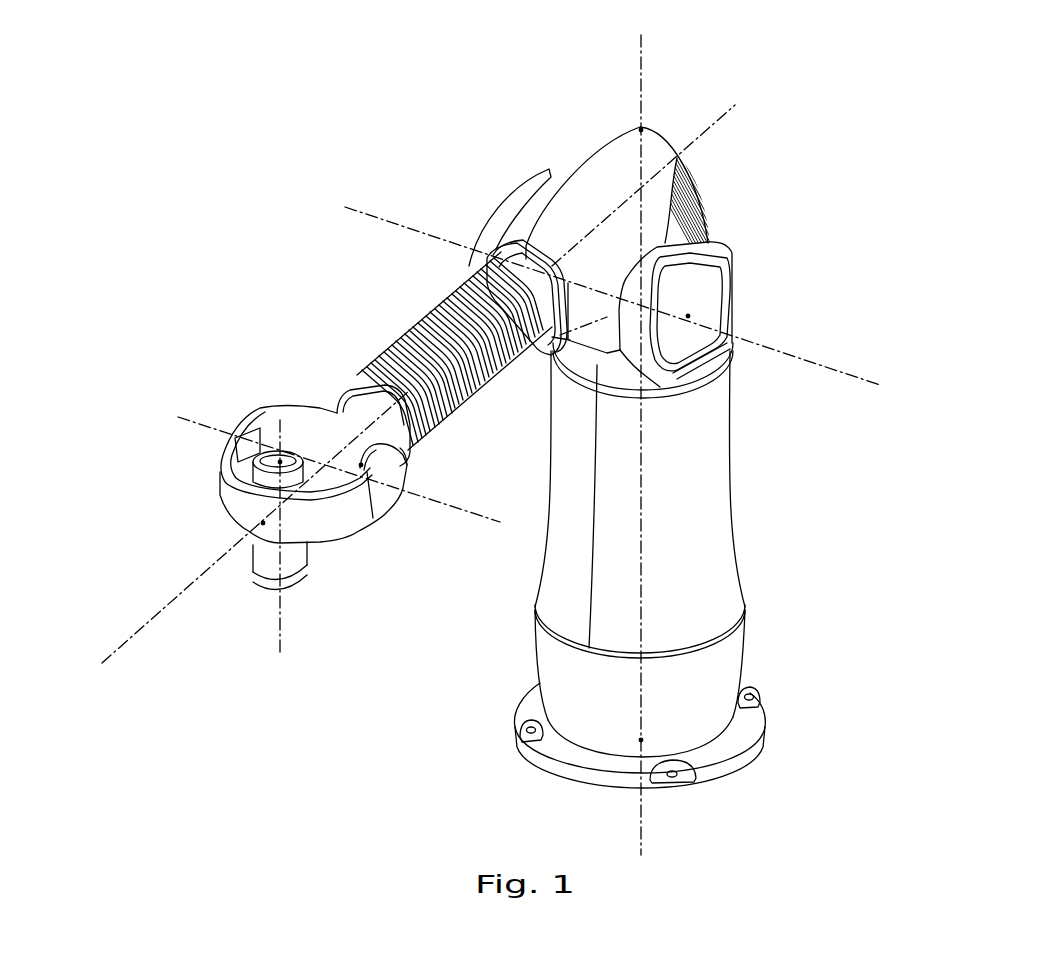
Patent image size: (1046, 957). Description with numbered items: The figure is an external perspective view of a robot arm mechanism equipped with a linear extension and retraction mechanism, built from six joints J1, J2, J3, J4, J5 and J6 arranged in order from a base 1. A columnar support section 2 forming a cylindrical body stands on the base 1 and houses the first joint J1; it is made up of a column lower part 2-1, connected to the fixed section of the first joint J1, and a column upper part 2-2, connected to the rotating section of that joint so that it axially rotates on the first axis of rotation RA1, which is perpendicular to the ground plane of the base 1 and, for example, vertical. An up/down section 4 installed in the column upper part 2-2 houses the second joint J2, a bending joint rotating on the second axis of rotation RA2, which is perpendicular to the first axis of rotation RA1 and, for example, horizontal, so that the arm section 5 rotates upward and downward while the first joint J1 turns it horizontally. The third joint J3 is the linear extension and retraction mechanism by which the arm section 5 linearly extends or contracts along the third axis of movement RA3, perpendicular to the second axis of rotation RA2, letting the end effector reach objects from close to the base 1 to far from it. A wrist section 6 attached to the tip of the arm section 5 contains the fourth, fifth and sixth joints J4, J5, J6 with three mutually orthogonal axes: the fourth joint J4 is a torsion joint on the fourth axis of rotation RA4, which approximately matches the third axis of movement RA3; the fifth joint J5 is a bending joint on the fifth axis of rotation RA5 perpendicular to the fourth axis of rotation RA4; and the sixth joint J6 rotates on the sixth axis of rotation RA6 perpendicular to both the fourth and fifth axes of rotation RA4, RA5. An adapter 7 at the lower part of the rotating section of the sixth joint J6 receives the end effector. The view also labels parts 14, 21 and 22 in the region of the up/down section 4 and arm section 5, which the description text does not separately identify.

The base 1 is at (765, 726).
The columnar support section 2 is at (693, 531).
The column lower part 2-1 is at (749, 657).
The column upper part 2-2 is at (730, 446).
The up/down section 4 is at (621, 95).
The arm section 5 is at (411, 319).
The wrist section 6 is at (284, 396).
The adapter 7 is at (304, 578).
The rib 14 is at (705, 203).
The joint housing 21 is at (733, 298).
The arm cover 22 is at (624, 130).
The first joint J1 is at (747, 603).
The second joint J2 is at (762, 205).
The third joint J3 is at (460, 272).
The fourth joint J4 is at (346, 371).
The fifth joint J5 is at (358, 549).
The sixth joint J6 is at (251, 586).
The first axis of rotation RA1 is at (646, 427).
The second axis of rotation RA2 is at (640, 309).
The third axis of movement RA3 is at (655, 166).
The fourth axis of rotation RA4 is at (237, 546).
The fifth axis of rotation RA5 is at (312, 452).
The sixth axis of rotation RA6 is at (281, 565).